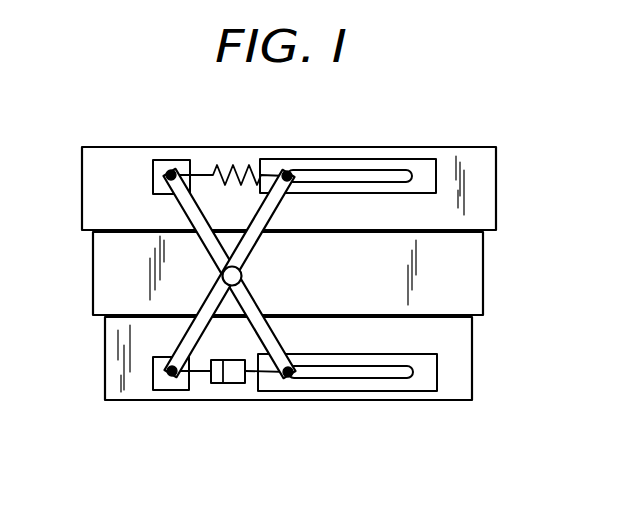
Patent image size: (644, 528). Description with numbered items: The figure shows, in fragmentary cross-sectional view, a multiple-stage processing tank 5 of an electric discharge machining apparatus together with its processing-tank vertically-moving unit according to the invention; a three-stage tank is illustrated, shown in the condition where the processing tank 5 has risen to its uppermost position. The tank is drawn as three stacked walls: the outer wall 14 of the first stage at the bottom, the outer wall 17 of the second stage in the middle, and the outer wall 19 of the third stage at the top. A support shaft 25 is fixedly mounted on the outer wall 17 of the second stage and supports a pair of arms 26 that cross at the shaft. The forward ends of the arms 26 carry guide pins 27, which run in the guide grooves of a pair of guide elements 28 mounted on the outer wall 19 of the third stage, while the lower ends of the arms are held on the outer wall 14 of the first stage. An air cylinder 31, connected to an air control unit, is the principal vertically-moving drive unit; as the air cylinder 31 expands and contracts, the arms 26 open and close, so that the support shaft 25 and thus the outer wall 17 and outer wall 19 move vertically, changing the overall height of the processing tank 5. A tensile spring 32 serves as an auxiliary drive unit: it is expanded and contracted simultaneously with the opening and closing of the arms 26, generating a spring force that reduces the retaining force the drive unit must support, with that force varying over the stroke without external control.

The processing tank 5 is at (321, 247).
The outer wall of the first stage 14 is at (465, 366).
The outer wall of the second stage 17 is at (475, 290).
The outer wall of the third stage 19 is at (487, 193).
The support shaft 25 is at (217, 276).
The arms 26 is at (173, 212).
The guide pins 27 is at (290, 162).
The guide elements 28 is at (425, 163).
The air cylinder 31 is at (230, 383).
The spring 32 is at (228, 153).